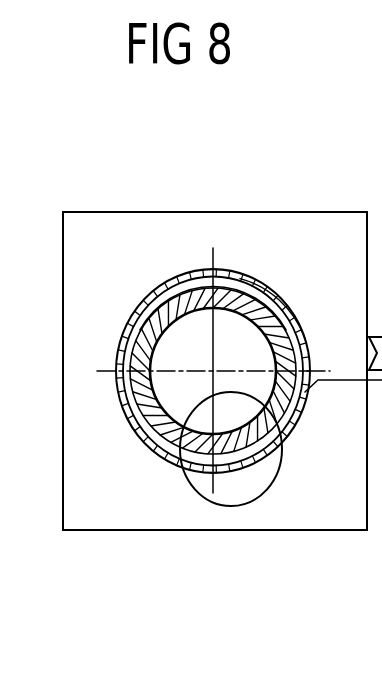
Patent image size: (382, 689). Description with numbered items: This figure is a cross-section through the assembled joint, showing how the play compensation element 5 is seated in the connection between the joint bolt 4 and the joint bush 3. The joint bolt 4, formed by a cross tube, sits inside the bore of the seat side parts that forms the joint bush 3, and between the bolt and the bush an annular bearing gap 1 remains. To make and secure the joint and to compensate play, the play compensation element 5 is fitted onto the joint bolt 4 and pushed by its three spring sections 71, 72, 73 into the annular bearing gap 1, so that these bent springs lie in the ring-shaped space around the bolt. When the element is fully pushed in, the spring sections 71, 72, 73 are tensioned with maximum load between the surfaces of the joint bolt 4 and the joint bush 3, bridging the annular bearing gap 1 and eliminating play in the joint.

The annular bearing gap 1 is at (150, 450).
The joint bush 3 is at (293, 327).
The joint bolt 4 is at (185, 277).
The play compensation element 5 is at (189, 452).
The spring section 71 is at (268, 291).
The spring section 72 is at (115, 373).
The spring section 73 is at (242, 456).